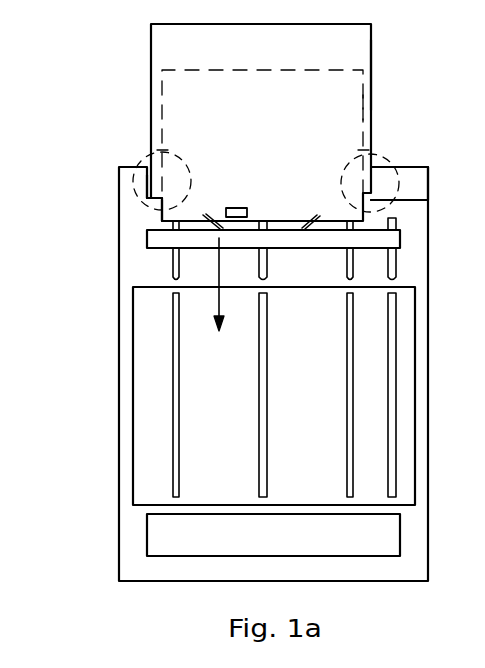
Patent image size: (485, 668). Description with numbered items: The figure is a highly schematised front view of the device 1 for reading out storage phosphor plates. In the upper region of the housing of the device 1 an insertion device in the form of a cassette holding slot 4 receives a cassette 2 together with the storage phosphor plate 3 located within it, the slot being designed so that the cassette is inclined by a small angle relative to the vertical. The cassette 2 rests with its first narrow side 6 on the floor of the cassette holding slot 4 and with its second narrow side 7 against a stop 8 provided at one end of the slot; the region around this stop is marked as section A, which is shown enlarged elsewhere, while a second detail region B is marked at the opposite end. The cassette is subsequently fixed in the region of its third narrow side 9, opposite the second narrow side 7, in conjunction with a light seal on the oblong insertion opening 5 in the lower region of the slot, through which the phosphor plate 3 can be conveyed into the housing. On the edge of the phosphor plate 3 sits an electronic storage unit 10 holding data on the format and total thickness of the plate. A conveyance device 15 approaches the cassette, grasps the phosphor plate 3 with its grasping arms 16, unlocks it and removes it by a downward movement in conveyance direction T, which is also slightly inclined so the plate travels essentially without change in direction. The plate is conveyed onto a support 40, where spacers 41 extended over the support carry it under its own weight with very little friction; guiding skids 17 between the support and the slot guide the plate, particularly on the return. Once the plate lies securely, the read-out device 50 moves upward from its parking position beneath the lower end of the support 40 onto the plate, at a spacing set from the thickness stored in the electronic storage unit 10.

The device 1 is at (96, 218).
The cassette 2 is at (151, 40).
The storage phosphor plate 3 is at (363, 107).
The cassette holding slot 4 is at (413, 178).
The insertion opening 5 is at (150, 208).
The first narrow side 6 is at (270, 192).
The second narrow side 7 is at (151, 77).
The stop 8 is at (148, 182).
The third narrow side 9 is at (372, 73).
The electronic storage unit 10 is at (237, 208).
The conveyance device 15 is at (400, 237).
The grasping arms 16 is at (203, 213).
The guiding skids 17 is at (392, 270).
The support 40 is at (148, 331).
The spacers 41 is at (177, 422).
The read-out device 50 is at (155, 534).
The section A is at (130, 180).
The detail B is at (395, 159).
The conveyance direction T is at (216, 307).